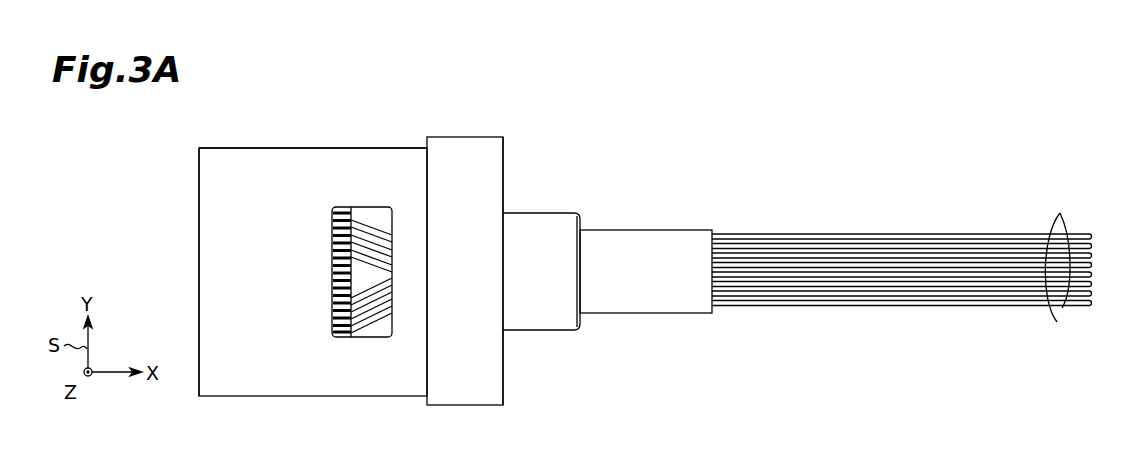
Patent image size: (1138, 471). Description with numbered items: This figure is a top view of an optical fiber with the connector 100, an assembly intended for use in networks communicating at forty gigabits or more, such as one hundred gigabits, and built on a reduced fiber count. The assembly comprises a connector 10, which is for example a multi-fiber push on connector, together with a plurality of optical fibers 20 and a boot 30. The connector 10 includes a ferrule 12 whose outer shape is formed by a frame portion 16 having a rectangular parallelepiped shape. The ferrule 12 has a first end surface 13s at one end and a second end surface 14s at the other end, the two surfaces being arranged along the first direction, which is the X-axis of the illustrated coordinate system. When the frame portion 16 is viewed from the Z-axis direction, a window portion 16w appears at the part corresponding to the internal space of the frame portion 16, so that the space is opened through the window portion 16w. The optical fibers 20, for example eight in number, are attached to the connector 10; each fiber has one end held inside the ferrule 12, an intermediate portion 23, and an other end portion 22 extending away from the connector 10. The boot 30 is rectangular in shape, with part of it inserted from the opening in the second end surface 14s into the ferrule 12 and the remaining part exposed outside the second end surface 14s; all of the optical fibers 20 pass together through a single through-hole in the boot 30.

The optical fiber with the connector 100 is at (989, 132).
The connector 10 is at (462, 136).
The ferrule 12 is at (409, 147).
The first end surface 13s is at (196, 387).
The second end surface 14s is at (505, 382).
The frame portion 16 is at (322, 158).
The window portion 16w is at (389, 216).
The optical fibers 20 is at (1060, 214).
The other end portion 22 is at (865, 232).
The intermediate portion 23 is at (650, 226).
The boot 30 is at (540, 222).